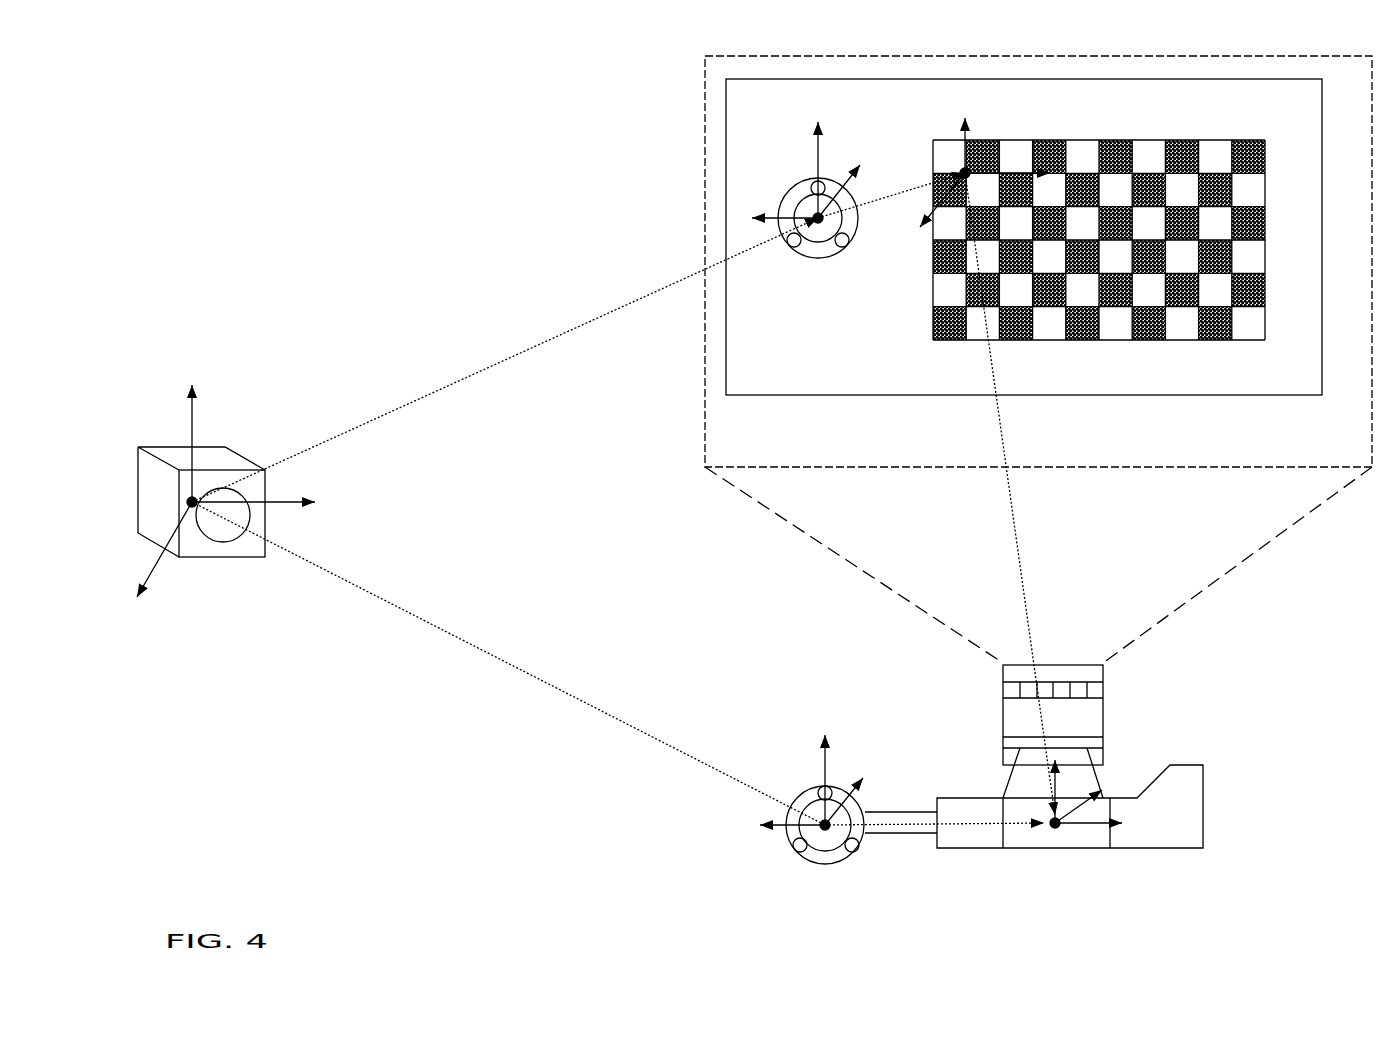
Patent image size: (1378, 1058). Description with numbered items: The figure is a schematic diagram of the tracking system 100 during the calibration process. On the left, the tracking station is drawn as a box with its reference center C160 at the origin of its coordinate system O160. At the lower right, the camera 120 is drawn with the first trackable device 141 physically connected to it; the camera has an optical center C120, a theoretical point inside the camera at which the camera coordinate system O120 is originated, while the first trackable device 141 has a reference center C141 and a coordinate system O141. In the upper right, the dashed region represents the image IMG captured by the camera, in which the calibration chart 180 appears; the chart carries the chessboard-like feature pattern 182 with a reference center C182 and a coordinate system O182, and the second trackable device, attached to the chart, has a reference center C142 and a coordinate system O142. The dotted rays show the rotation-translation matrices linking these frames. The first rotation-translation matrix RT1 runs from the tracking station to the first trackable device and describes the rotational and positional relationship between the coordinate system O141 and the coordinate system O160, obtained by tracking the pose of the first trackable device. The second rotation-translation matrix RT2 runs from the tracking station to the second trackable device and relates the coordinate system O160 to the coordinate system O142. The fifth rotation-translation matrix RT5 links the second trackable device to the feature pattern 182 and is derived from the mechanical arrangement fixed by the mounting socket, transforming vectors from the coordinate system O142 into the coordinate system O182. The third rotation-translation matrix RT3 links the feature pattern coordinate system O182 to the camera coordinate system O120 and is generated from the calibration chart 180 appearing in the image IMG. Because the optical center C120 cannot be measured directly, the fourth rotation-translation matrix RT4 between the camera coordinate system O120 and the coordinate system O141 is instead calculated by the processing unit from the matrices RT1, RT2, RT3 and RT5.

The tracking system 100 is at (212, 111).
The image IMG is at (705, 98).
The calibration chart 180 is at (1207, 397).
The feature pattern 182 is at (1205, 140).
The reference center of the feature pattern C182 is at (963, 168).
The coordinate system of the feature pattern O182 is at (970, 162).
The reference center of the second trackable device C142 is at (818, 232).
The coordinate system of the second trackable device O142 is at (818, 163).
The first rotation-translation matrix RT1 is at (508, 663).
The second rotation-translation matrix RT2 is at (505, 360).
The third rotation-translation matrix RT3 is at (1010, 494).
The fourth rotation-translation matrix RT4 is at (934, 826).
The fifth rotation-translation matrix RT5 is at (891, 195).
The reference center of the tracking station C160 is at (190, 505).
The coordinate system of the tracking station O160 is at (190, 425).
The first trackable device 141 is at (800, 855).
The reference center of the first trackable device C141 is at (825, 838).
The coordinate system of the first trackable device O141 is at (825, 765).
The camera 120 is at (1170, 765).
The optical center of the camera C120 is at (1055, 832).
The camera coordinate system O120 is at (1085, 826).